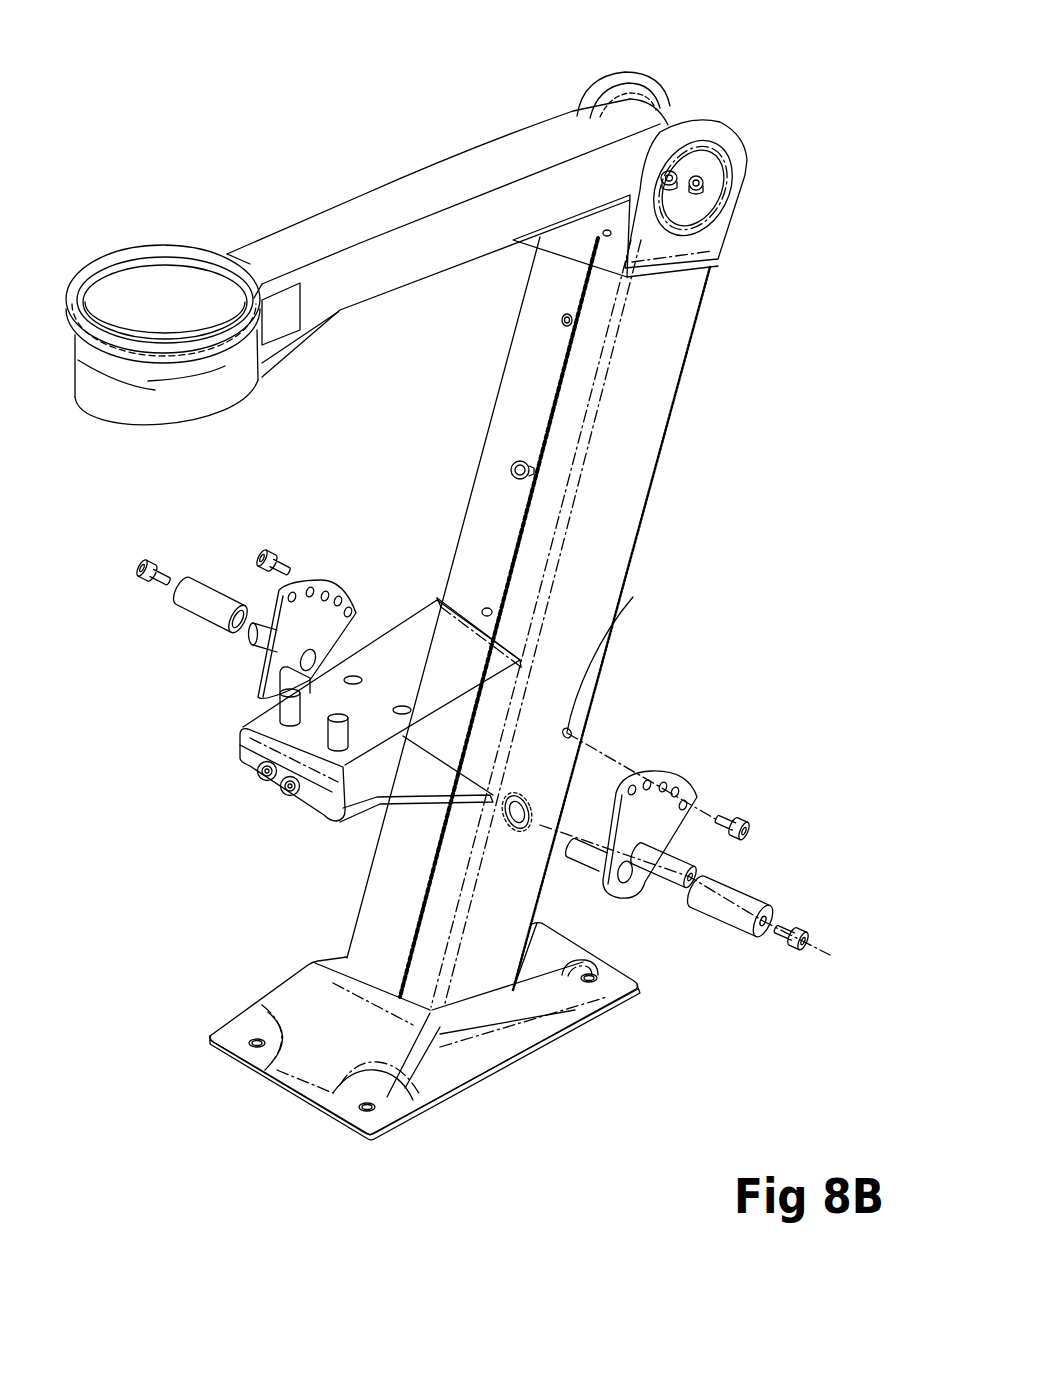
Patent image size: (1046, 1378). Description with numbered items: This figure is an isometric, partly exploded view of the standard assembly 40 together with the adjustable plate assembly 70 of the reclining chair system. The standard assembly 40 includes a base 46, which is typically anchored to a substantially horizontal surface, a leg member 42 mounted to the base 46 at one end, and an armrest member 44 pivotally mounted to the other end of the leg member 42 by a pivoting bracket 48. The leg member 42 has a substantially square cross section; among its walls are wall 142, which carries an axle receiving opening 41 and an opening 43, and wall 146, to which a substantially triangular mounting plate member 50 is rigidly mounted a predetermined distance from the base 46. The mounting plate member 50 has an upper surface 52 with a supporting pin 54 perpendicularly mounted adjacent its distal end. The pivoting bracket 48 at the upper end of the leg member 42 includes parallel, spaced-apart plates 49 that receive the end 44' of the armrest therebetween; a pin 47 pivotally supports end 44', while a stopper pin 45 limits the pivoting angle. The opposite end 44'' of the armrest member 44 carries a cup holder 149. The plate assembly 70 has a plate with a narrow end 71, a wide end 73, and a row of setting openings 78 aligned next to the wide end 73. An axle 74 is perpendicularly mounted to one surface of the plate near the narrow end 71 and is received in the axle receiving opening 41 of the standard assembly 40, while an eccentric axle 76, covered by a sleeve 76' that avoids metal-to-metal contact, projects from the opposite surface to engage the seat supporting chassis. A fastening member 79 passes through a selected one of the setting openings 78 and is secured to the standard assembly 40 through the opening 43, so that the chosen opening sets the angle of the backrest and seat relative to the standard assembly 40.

The standard assembly 40 is at (595, 601).
The axle receiving opening 41 is at (503, 813).
The leg member 42 is at (658, 465).
The opening 43 is at (633, 597).
The armrest member 44 is at (464, 208).
The end 44' is at (696, 83).
The end 44'' is at (214, 225).
The stopper pin 45 is at (690, 182).
The base 46 is at (603, 1010).
The pin 47 is at (703, 184).
The pivoting bracket 48 is at (713, 144).
The plates 49 is at (607, 73).
The mounting plate member 50 is at (319, 671).
The upper surface 52 is at (402, 655).
The supporting pin 54 is at (287, 703).
The plate assembly 70 is at (721, 827).
The narrow end 71 is at (628, 877).
The wide end 73 is at (713, 808).
The axle 74 is at (585, 862).
The axle 76 is at (733, 861).
The sleeve 76' is at (793, 903).
The setting openings 78 is at (665, 778).
The fastening member 79 is at (697, 783).
The wall 142 is at (648, 377).
The wall 146 is at (527, 338).
The cup holder 149 is at (138, 247).